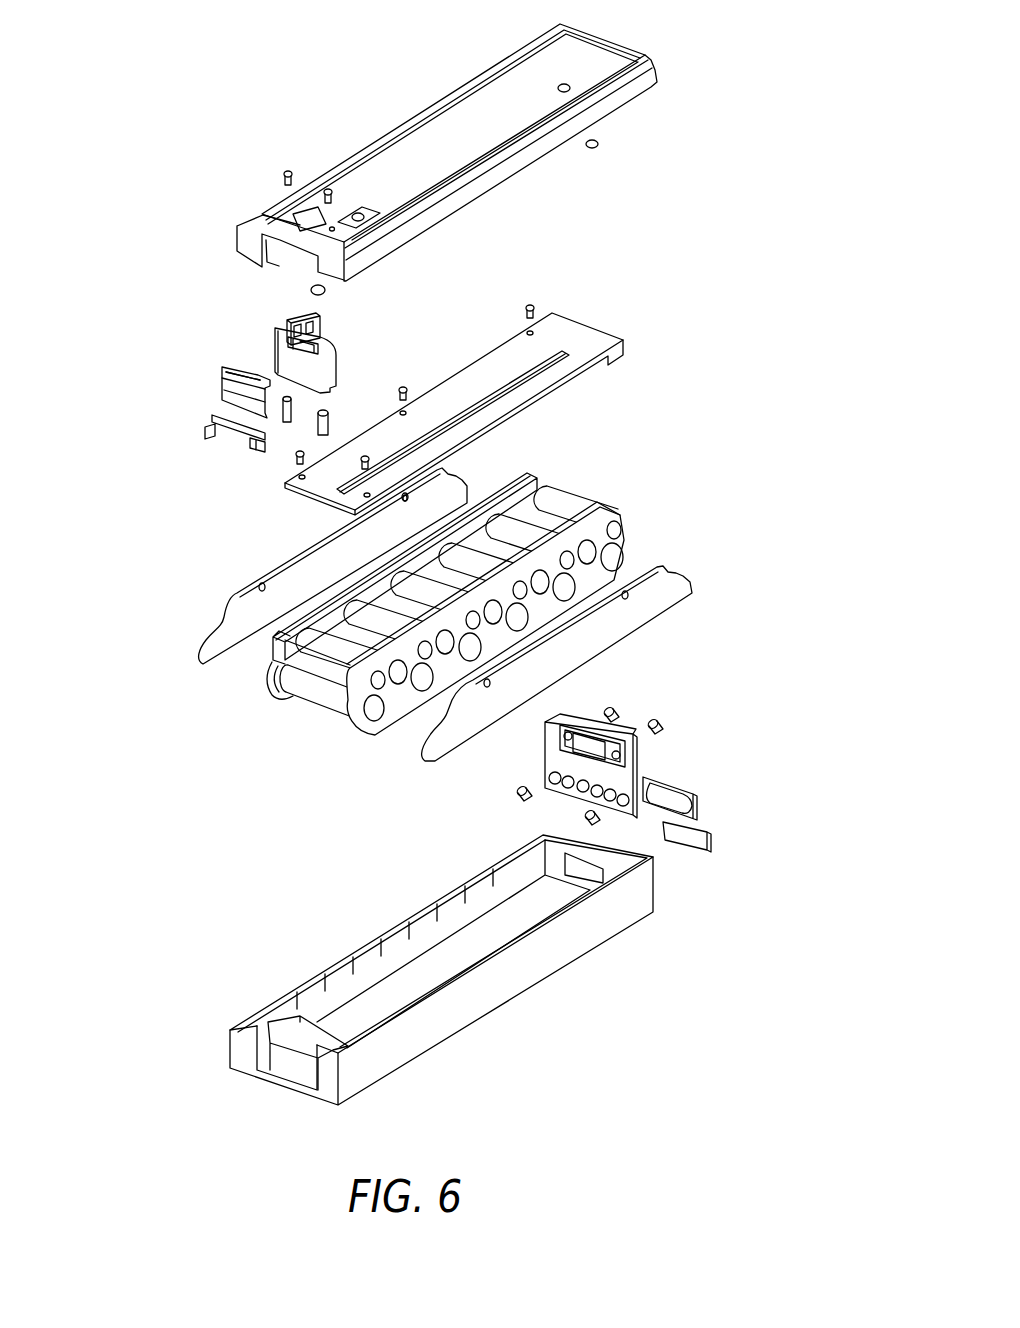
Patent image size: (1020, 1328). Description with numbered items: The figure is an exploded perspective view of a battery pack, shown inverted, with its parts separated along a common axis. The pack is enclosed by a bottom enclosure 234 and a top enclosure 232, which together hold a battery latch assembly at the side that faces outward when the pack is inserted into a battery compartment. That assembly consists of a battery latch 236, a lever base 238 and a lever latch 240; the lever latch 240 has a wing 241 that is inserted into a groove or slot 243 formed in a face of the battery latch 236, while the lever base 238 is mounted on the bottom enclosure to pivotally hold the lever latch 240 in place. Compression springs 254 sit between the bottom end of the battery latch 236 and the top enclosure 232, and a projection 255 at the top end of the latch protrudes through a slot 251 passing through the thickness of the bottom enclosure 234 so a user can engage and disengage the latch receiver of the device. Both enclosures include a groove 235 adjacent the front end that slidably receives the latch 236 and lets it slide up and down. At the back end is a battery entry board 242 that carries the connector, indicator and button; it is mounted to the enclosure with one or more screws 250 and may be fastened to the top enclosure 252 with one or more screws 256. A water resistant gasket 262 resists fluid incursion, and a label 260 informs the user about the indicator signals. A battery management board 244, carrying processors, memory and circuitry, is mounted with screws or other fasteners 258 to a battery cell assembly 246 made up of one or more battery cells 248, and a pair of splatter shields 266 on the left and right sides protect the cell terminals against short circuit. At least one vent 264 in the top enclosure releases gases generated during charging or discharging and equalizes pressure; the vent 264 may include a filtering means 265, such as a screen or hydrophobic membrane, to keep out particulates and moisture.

The top enclosure 232 is at (495, 985).
The bottom enclosure 234 is at (425, 140).
The groove 235 is at (270, 255).
The battery latch 236 is at (282, 355).
The lever base 238 is at (205, 430).
The lever latch 240 is at (222, 392).
The wing 241 is at (235, 367).
The battery entry board 242 is at (637, 765).
The slot 243 is at (303, 347).
The battery management board 244 is at (595, 340).
The battery cell assembly 246 is at (265, 680).
The battery cells 248 is at (543, 522).
The screws 250 is at (518, 794).
The slot 251 is at (293, 213).
The top enclosure 252 is at (286, 170).
The compression springs 254 is at (317, 424).
The projection 255 is at (313, 316).
The screws 256 is at (617, 707).
The fasteners 258 is at (526, 308).
The label 260 is at (710, 842).
The water resistant gasket 262 is at (677, 788).
The vent 264 is at (567, 84).
The filtering means 265 is at (600, 145).
The splatter shields 266 is at (673, 600).